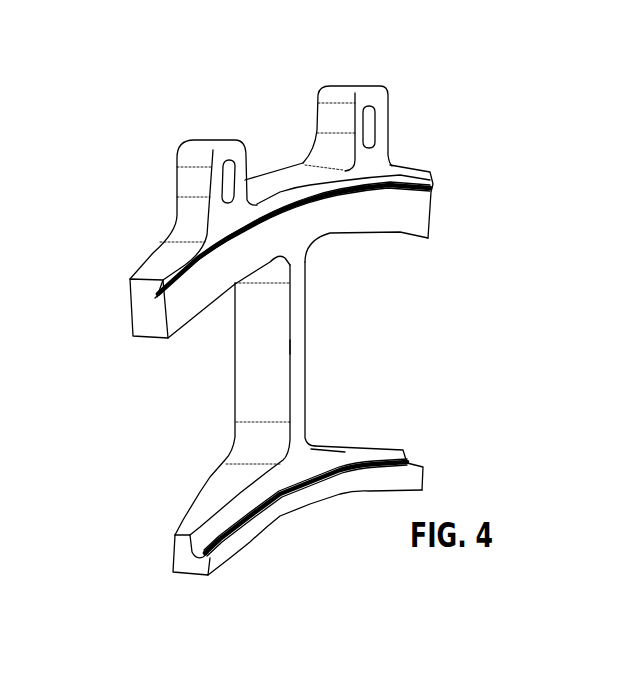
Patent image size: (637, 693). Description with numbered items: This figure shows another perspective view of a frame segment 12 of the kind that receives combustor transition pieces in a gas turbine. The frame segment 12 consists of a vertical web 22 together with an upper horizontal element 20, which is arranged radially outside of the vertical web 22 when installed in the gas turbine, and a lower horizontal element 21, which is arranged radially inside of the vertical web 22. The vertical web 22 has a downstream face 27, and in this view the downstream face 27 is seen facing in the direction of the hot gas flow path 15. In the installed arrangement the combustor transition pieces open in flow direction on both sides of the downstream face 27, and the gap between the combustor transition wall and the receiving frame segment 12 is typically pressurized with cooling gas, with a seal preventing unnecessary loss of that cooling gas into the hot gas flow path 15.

The frame segment 12 is at (258, 129).
The upper horizontal element 20 is at (163, 253).
The lower horizontal element 21 is at (218, 489).
The vertical web 22 is at (252, 363).
The downstream face 27 is at (297, 360).
The hot gas flow path 15 is at (212, 346).